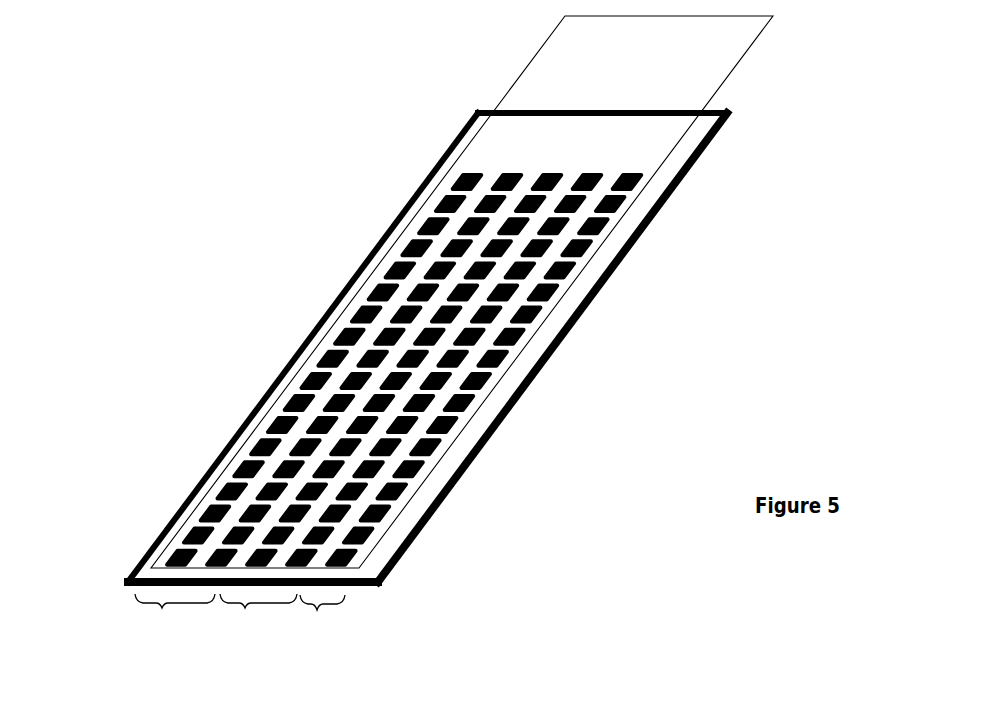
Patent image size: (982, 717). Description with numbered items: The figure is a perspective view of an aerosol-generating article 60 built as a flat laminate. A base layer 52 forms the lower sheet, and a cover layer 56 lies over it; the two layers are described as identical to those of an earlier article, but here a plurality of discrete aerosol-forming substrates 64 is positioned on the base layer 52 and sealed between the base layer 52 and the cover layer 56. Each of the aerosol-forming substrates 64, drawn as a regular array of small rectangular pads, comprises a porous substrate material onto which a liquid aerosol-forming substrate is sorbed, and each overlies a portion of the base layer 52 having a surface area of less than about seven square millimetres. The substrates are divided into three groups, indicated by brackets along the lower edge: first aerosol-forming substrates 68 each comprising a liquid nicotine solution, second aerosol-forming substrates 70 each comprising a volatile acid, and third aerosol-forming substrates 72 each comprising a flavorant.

The base layer 52 is at (470, 125).
The cover layer 56 is at (685, 72).
The aerosol-generating article 60 is at (283, 218).
The aerosol-forming substrates 64 is at (340, 333).
The first aerosol-forming substrates 68 is at (162, 608).
The second aerosol-forming substrates 70 is at (245, 608).
The third aerosol-forming substrates 72 is at (317, 610).